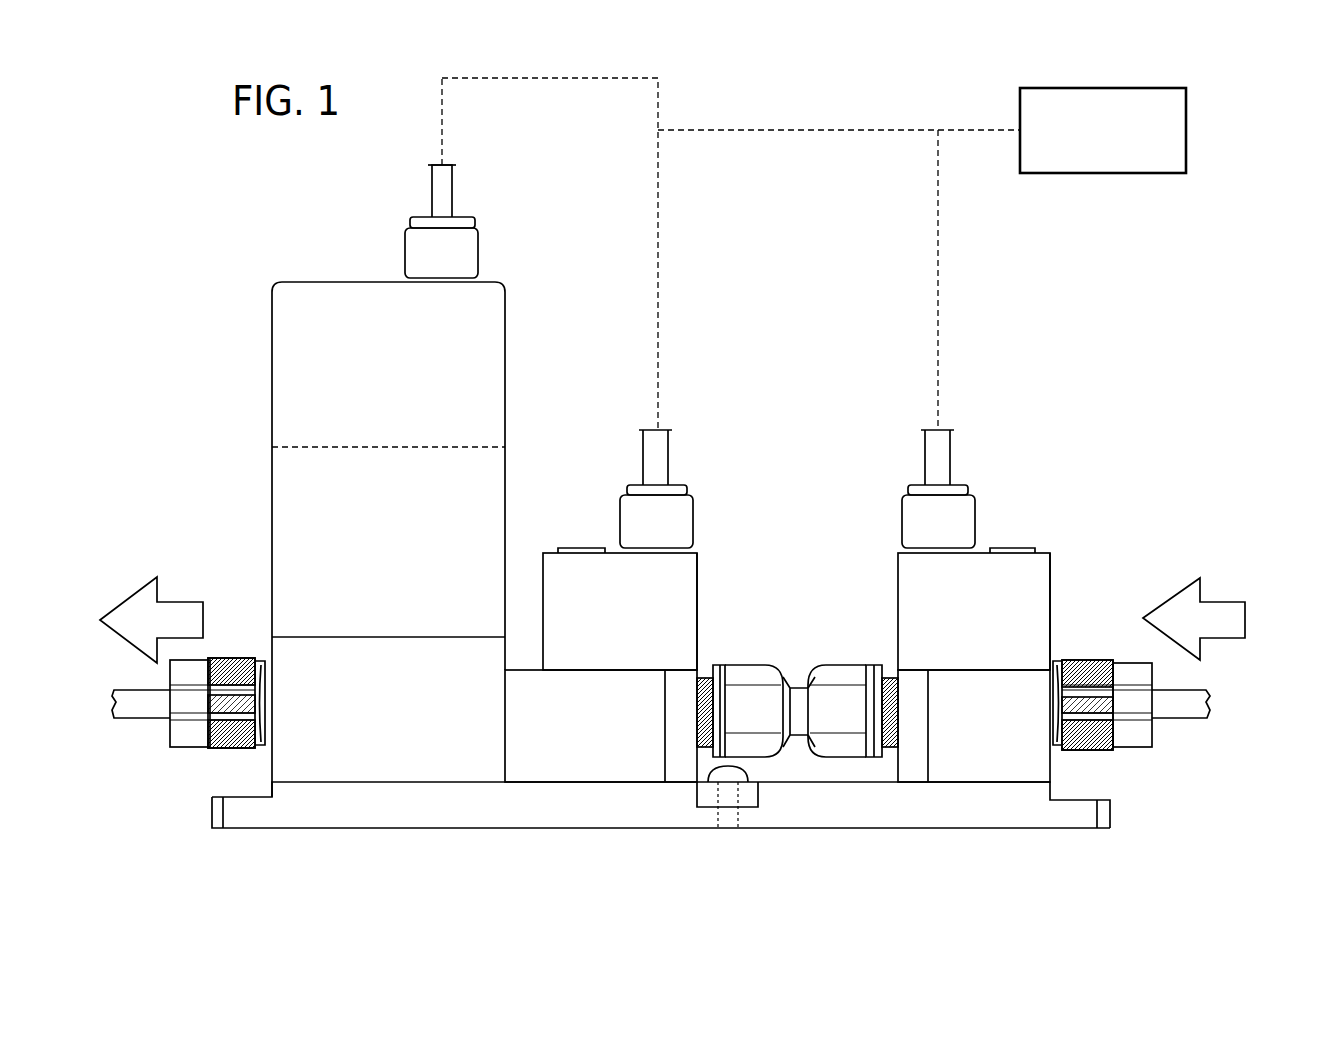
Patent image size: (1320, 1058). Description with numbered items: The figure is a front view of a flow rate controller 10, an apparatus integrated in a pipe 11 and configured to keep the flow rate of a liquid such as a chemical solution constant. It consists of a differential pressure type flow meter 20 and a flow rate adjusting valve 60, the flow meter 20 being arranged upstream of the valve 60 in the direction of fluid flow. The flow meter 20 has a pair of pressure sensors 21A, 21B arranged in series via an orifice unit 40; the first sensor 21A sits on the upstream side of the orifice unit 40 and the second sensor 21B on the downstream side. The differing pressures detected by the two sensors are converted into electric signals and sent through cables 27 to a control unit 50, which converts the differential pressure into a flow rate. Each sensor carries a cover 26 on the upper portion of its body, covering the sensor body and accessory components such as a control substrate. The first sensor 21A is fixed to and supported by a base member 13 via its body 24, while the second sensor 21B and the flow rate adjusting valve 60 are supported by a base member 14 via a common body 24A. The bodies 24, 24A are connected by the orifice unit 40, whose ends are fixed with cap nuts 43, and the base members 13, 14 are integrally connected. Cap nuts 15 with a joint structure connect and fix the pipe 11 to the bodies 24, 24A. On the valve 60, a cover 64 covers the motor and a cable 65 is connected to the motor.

The flow rate controller 10 is at (708, 487).
The pipe 11 is at (135, 720).
The base member 13 is at (950, 810).
The base member 14 is at (542, 810).
The cap nut 15 is at (232, 658).
The differential pressure type flow meter 20 is at (811, 649).
The pressure sensor (first sensor) 21A is at (1052, 557).
The pressure sensor (second sensor) 21B is at (699, 561).
The body 24 is at (1040, 765).
The body 24A is at (598, 765).
The cover 26 is at (683, 590).
The cable 27 is at (668, 455).
The orifice unit 40 is at (797, 677).
The cap nut 43 is at (758, 665).
The control unit 50 is at (1084, 173).
The flow rate adjusting valve 60 is at (400, 437).
The cover 64 is at (507, 355).
The cable 65 is at (452, 190).